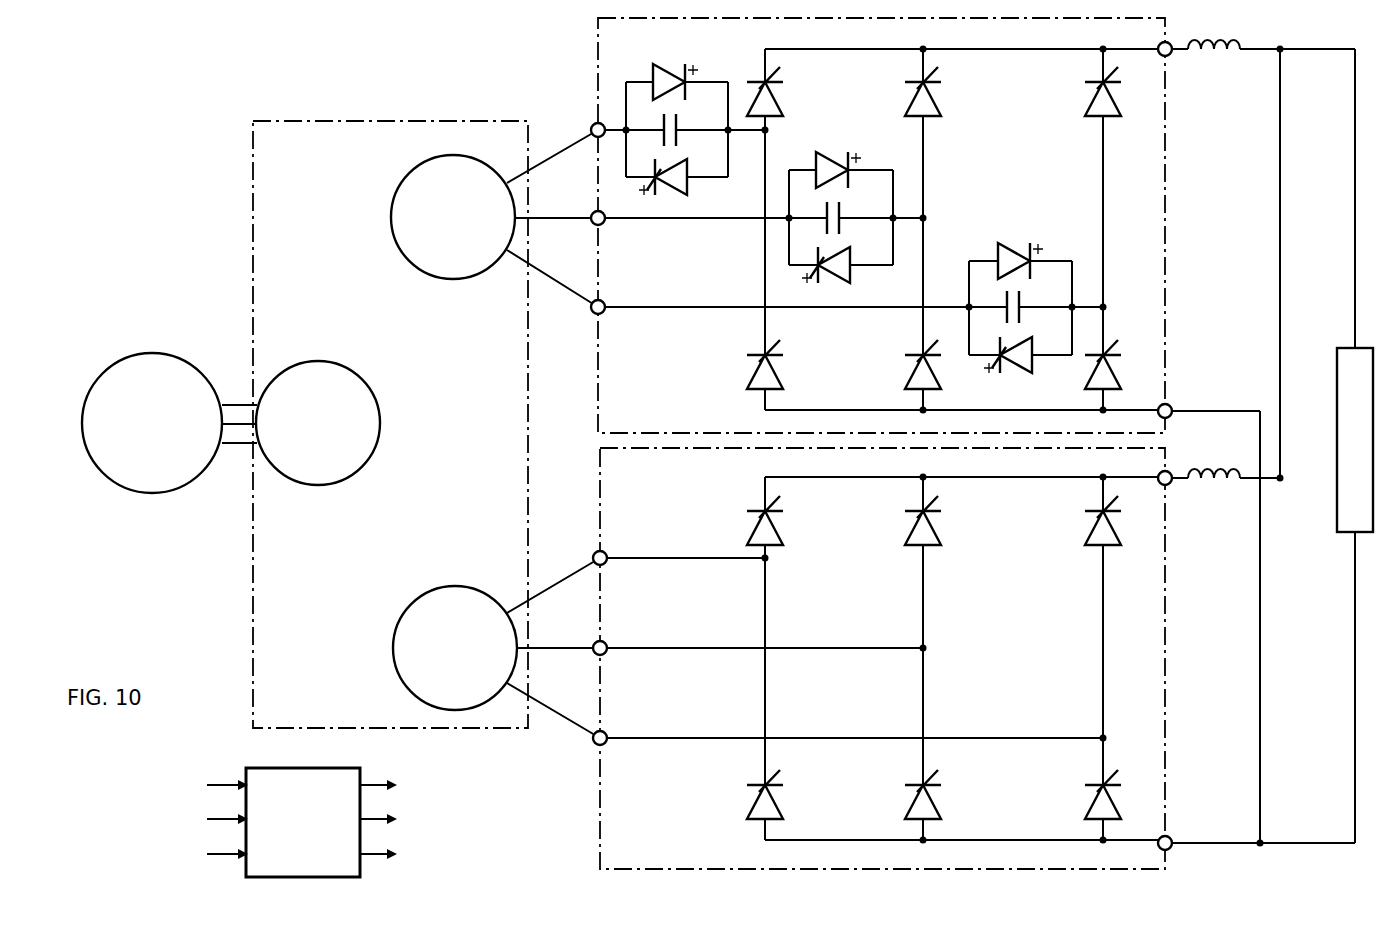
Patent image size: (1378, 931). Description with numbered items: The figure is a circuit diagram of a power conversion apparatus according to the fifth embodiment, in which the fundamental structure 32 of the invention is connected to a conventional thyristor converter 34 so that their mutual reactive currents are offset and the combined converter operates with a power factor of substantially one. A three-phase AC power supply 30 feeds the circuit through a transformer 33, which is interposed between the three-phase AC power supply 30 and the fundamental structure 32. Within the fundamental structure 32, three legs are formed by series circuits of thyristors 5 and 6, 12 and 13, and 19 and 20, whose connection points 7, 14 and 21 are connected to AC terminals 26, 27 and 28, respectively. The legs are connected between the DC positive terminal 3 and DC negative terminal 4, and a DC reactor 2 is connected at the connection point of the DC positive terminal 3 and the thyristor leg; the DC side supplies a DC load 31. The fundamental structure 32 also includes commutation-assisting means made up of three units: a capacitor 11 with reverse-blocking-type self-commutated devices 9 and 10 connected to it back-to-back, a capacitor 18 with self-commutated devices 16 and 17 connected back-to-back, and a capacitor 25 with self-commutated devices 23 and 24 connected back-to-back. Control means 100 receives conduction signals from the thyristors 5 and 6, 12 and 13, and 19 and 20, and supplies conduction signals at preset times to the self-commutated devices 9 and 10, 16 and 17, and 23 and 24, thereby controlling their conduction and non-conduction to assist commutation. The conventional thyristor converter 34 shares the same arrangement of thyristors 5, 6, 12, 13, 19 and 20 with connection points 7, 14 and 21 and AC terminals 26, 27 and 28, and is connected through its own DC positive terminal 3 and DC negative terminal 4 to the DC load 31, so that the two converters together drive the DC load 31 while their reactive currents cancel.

The DC reactor 2 is at (1213, 62).
The DC positive terminal 3 is at (1170, 46).
The DC negative terminal 4 is at (1170, 405).
The thyristor 5 is at (784, 378).
The thyristor 6 is at (780, 108).
The connection point 7 is at (770, 134).
The self-commutated device 9 is at (688, 190).
The self-commutated device 10 is at (698, 78).
The capacitor 11 is at (682, 118).
The thyristor 12 is at (912, 378).
The thyristor 13 is at (938, 108).
The connection point 14 is at (928, 218).
The self-commutated device 16 is at (854, 278).
The self-commutated device 17 is at (858, 166).
The capacitor 18 is at (848, 210).
The thyristor 19 is at (1118, 378).
The thyristor 20 is at (1118, 108).
The connection point 21 is at (1105, 308).
The self-commutated device 23 is at (1034, 360).
The self-commutated device 24 is at (1040, 252).
The capacitor 25 is at (1024, 302).
The AC terminal 26 is at (598, 128).
The AC terminal 27 is at (598, 216).
The AC terminal 28 is at (598, 312).
The three-phase AC power supply 30 is at (152, 353).
The DC load 31 is at (1337, 378).
The fundamental structure 32 is at (598, 42).
The transformer 33 is at (458, 121).
The conventional thyristor converter 34 is at (600, 470).
The control means 100 is at (325, 770).